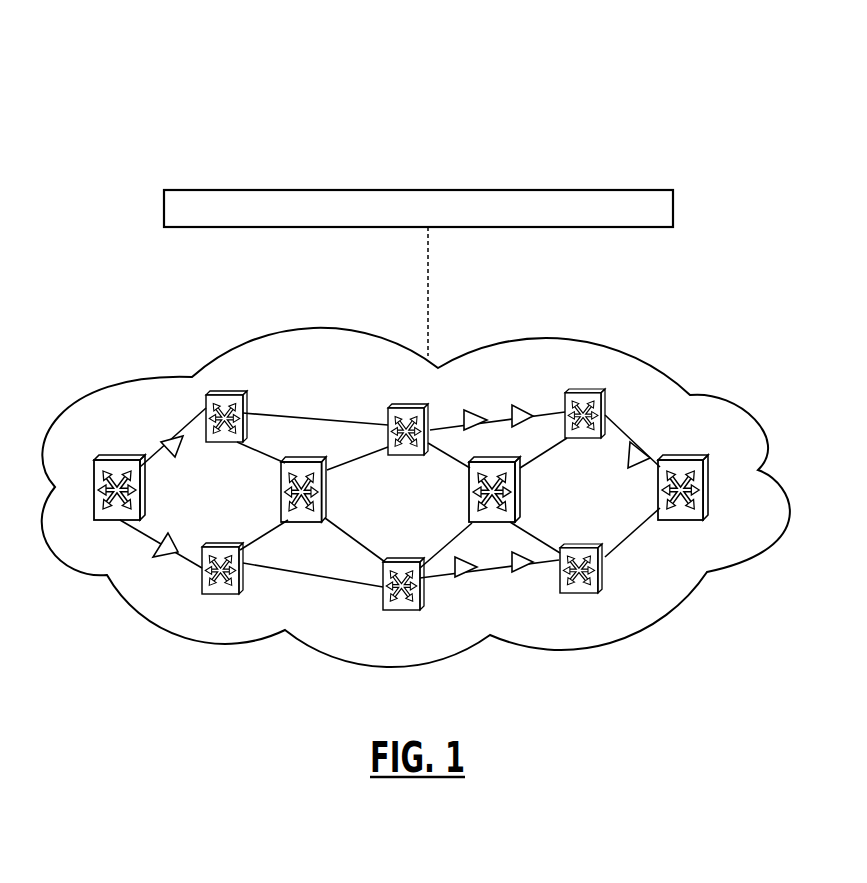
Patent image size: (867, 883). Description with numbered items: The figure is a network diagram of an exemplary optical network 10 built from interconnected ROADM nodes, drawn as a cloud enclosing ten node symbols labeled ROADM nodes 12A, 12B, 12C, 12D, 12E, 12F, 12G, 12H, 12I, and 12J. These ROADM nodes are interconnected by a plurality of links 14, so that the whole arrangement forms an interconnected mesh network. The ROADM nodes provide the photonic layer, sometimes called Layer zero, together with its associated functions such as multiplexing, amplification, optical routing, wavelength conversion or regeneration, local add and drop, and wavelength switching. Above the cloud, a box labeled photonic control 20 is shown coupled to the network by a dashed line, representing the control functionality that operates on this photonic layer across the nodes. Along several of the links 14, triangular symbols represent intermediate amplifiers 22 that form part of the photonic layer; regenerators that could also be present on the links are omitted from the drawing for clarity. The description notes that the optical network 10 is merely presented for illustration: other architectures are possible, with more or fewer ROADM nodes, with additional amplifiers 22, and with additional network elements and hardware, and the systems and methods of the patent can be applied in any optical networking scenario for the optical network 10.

The optical network 10 is at (472, 86).
The photonic control 20 is at (674, 207).
The links 14 is at (320, 417).
The intermediate amplifiers 22 is at (468, 410).
The ROADM node 12A is at (123, 455).
The ROADM node 12B is at (305, 523).
The ROADM node 12C is at (487, 523).
The ROADM node 12D is at (677, 523).
The ROADM node 12E is at (234, 392).
The ROADM node 12F is at (403, 457).
The ROADM node 12G is at (577, 440).
The ROADM node 12H is at (227, 547).
The ROADM node 12I is at (408, 560).
The ROADM node 12J is at (588, 543).